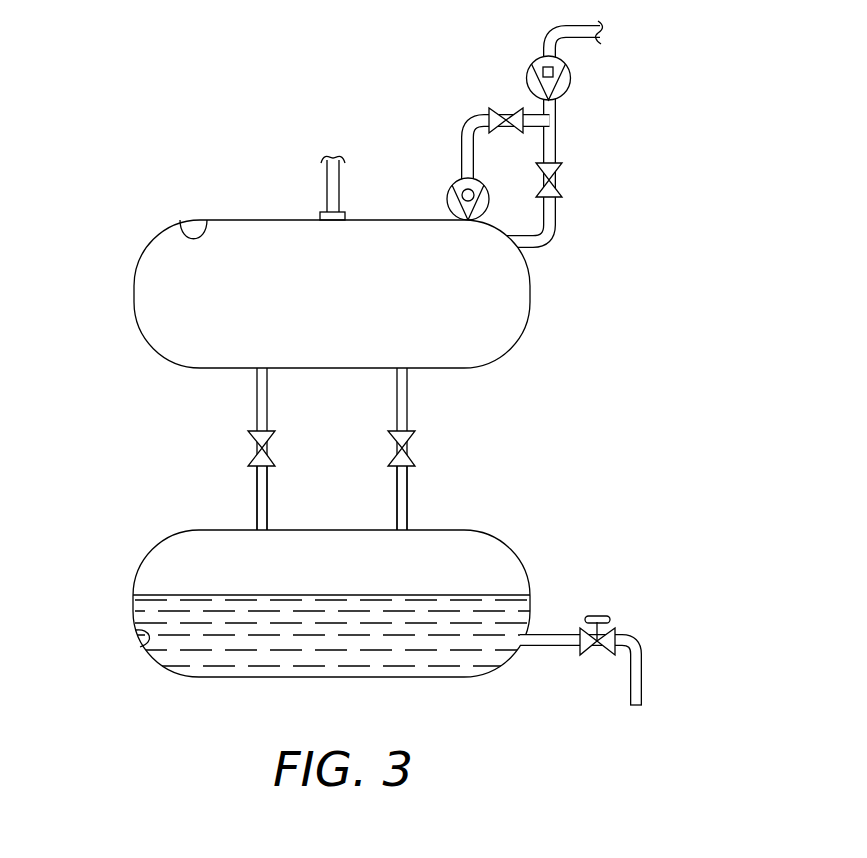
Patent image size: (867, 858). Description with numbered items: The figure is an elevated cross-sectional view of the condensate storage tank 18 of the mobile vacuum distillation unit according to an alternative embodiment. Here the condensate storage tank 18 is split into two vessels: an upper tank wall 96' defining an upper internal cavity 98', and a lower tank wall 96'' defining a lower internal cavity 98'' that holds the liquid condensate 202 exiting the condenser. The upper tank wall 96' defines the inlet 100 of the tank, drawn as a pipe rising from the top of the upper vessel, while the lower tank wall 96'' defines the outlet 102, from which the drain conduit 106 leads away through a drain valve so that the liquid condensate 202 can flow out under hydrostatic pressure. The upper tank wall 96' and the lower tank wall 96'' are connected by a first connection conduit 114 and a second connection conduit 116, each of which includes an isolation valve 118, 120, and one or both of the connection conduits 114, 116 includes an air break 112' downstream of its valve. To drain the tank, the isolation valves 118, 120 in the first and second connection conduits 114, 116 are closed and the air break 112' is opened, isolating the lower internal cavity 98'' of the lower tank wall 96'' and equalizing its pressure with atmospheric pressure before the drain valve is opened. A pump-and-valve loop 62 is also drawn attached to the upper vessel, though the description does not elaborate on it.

The condensate storage tank 18 is at (130, 398).
The pump and valve assembly 62 is at (587, 153).
The upper tank wall 96' is at (304, 277).
The upper internal cavity 98' is at (232, 196).
The inlet 100 is at (337, 209).
The outlet 102 is at (517, 638).
The drain conduit 106 is at (555, 633).
The air break 112' is at (386, 498).
The first connection conduit 114 is at (268, 410).
The second connection conduit 116 is at (408, 410).
The isolation valve 118 is at (275, 452).
The isolation valve 120 is at (415, 452).
The lower tank wall 96'' is at (300, 594).
The lower internal cavity 98'' is at (124, 663).
The liquid condensate 202 is at (364, 655).